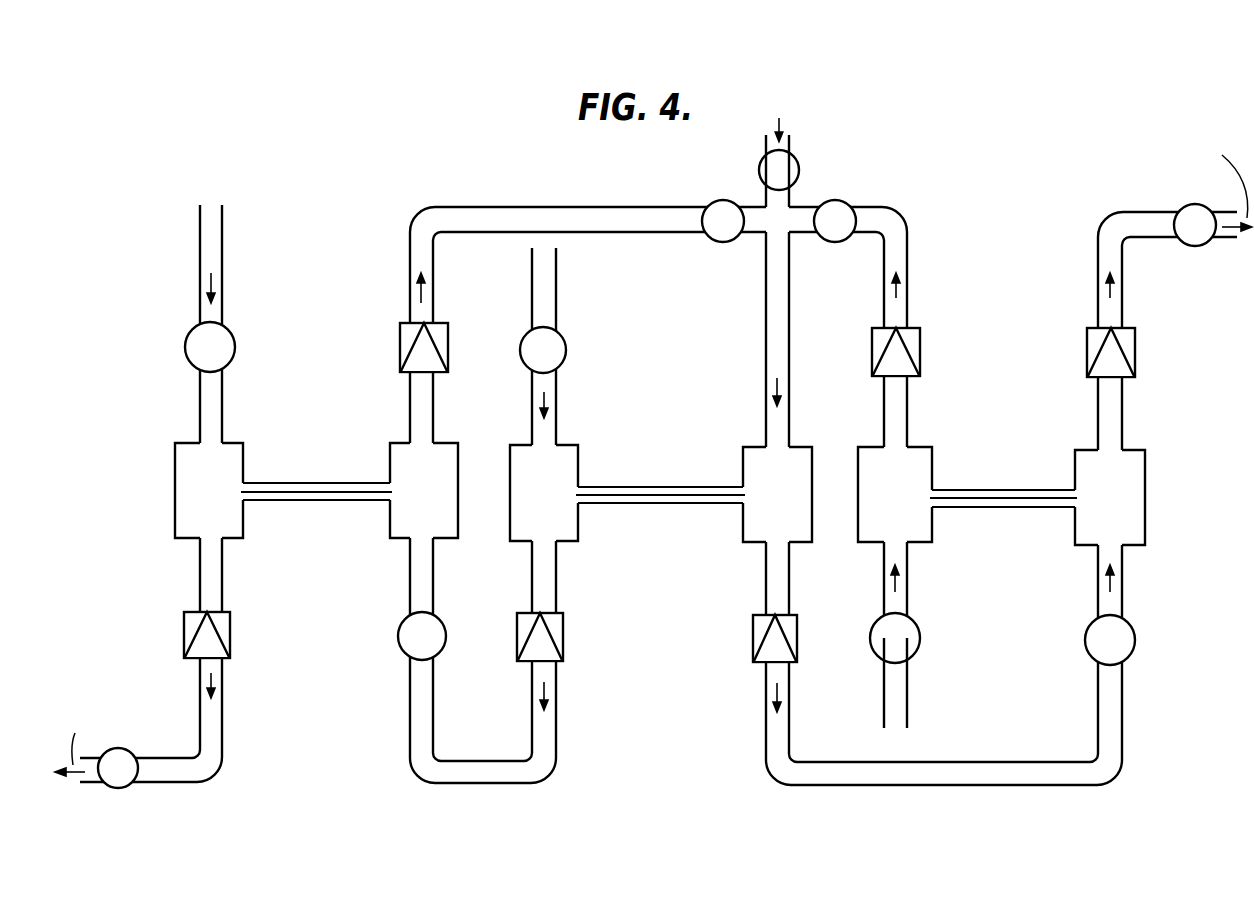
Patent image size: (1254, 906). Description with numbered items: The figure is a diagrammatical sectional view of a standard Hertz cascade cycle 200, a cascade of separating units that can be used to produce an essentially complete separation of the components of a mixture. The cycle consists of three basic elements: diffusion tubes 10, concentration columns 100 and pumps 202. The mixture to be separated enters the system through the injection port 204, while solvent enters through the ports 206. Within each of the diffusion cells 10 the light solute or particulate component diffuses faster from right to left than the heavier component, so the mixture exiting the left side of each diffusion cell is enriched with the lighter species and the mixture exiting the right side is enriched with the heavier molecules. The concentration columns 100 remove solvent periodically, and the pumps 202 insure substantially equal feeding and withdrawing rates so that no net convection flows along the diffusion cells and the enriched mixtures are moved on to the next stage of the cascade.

The diffusion tube 10 is at (320, 483).
The concentration column 100 is at (400, 352).
The Hertz cascade cycle 200 is at (655, 773).
The pump 202 is at (235, 347).
The injection port 204 is at (782, 148).
The solvent port 206 is at (223, 228).